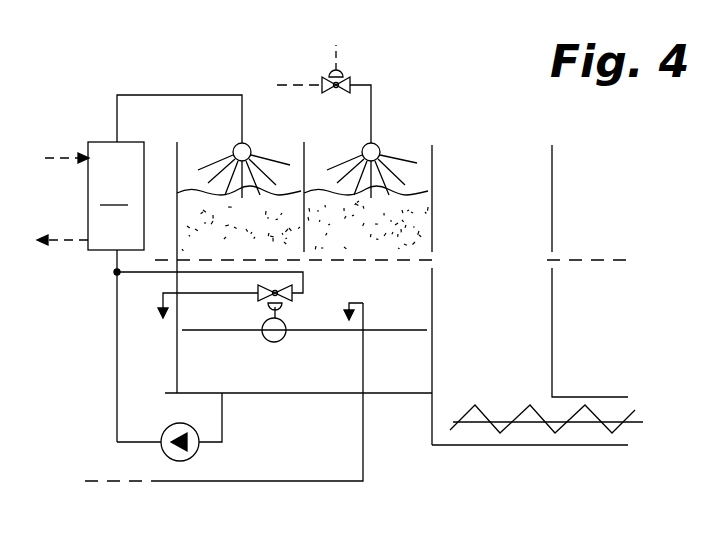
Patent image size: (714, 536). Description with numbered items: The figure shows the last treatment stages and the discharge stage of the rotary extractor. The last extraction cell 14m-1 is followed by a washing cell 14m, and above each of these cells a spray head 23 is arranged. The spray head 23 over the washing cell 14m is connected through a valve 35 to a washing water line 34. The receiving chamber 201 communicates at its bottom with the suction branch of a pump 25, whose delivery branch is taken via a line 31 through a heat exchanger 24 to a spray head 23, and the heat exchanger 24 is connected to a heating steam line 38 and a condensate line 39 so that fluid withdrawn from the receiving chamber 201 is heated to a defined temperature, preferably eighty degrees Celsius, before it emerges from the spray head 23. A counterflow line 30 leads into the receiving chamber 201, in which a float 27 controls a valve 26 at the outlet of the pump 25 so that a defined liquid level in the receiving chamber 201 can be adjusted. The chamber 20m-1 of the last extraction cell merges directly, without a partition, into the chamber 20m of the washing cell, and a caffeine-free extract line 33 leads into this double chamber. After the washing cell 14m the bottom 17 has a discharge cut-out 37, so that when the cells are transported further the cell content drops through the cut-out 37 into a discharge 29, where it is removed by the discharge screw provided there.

The last extraction cell 14m-1 is at (281, 153).
The washing cell 14m is at (415, 157).
The spray head 23 is at (236, 147).
The washing water line 34 is at (318, 84).
The valve 35 is at (344, 78).
The heat exchanger 24 is at (116, 196).
The heating steam line 38 is at (50, 157).
The condensate line 39 is at (48, 239).
The bottom 17 is at (162, 258).
The line 31 is at (117, 272).
The counterflow line 30 is at (190, 293).
The valve 26 is at (286, 308).
The float 27 is at (281, 338).
The chamber of the last extraction cell 20m-1 is at (213, 310).
The pump 25 is at (167, 455).
The caffeine-free extract line 33 is at (250, 480).
The chamber of the washing cell 20m is at (400, 303).
The discharge cut-out 37 is at (495, 261).
The discharge 29 is at (568, 457).
The receiving chamber 201 is at (610, 373).